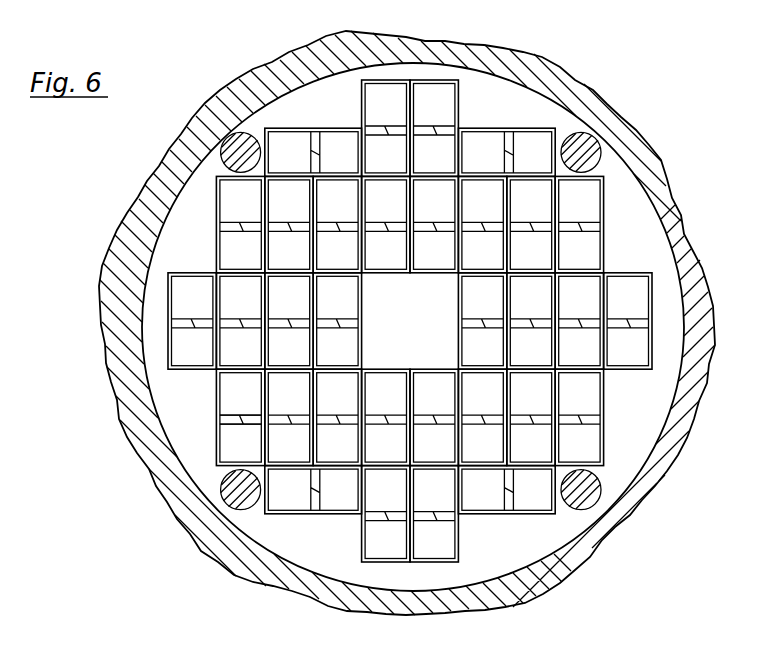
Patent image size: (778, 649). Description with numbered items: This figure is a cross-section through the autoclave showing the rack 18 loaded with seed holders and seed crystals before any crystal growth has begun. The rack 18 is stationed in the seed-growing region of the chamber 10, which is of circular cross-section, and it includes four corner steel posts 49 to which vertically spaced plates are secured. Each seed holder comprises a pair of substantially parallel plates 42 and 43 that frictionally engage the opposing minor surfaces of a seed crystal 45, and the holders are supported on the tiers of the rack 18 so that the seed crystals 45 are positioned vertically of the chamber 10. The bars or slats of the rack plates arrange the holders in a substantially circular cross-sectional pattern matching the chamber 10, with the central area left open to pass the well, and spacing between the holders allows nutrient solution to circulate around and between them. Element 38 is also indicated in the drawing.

The reactor vessel wall 10 is at (140, 204).
The core support pin 49 is at (598, 162).
The fuel assembly 18 is at (605, 227).
The spacer grid divider 45 is at (630, 327).
The fuel assembly channel wall 42 is at (216, 397).
The divider plate 43 is at (262, 403).
The fuel assembly 38 is at (603, 441).